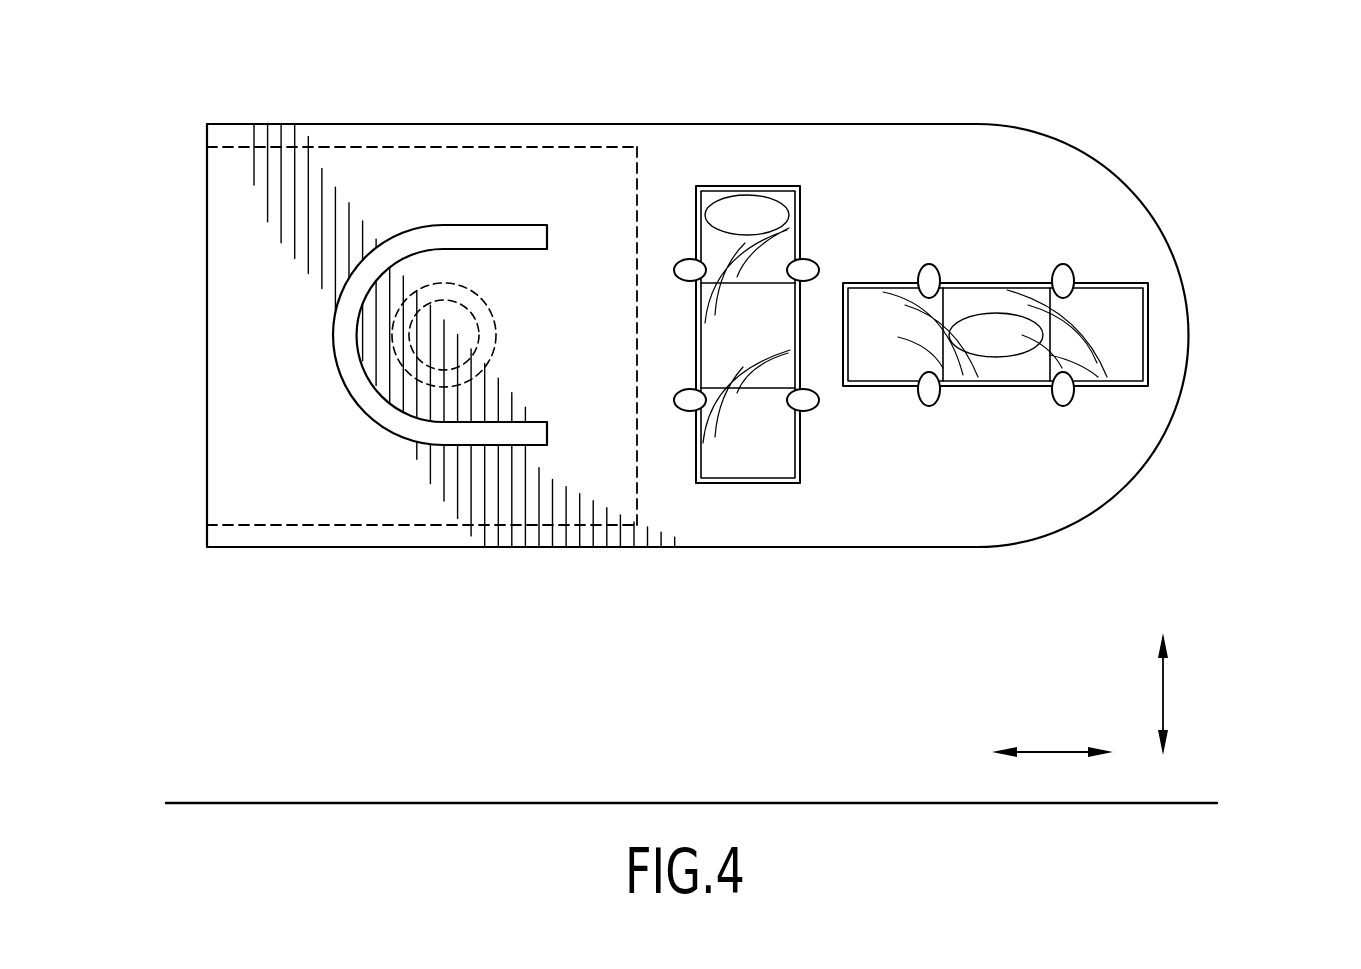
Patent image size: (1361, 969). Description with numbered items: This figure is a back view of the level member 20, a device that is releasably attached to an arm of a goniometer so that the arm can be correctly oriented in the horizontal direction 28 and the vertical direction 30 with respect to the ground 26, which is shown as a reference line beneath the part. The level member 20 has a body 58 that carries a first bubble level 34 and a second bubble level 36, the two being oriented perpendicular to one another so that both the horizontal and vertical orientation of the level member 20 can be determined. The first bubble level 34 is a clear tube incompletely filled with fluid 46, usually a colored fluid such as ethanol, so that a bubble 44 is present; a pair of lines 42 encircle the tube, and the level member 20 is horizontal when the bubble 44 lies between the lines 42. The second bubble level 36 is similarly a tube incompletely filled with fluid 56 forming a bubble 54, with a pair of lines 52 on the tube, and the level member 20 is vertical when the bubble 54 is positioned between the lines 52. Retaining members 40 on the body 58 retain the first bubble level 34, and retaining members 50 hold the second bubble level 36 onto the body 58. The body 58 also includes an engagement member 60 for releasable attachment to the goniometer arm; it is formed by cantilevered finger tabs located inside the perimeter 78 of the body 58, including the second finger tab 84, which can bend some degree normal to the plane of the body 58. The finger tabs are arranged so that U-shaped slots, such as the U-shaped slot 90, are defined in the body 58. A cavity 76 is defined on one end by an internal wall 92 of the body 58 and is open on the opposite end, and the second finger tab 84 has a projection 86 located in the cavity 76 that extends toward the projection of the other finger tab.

The level member 20 is at (1259, 190).
The ground 26 is at (220, 802).
The horizontal direction 28 is at (1055, 750).
The vertical direction 30 is at (1165, 693).
The first bubble level 34 is at (1085, 303).
The second bubble level 36 is at (707, 353).
The retaining members 40 is at (931, 266).
The lines 42 is at (1050, 312).
The bubble 44 is at (1002, 312).
The fluid 46 is at (1010, 370).
The retaining members 50 is at (678, 268).
The lines 52 is at (762, 282).
The bubble 54 is at (717, 207).
The fluid 56 is at (775, 432).
The body 58 is at (1039, 150).
The engagement member 60 is at (372, 505).
The cavity 76 is at (254, 422).
The perimeter 78 is at (697, 104).
The second finger tab 84 is at (357, 327).
The projection 86 is at (494, 304).
The U-shaped slot 90 is at (426, 233).
The internal wall 92 is at (638, 475).